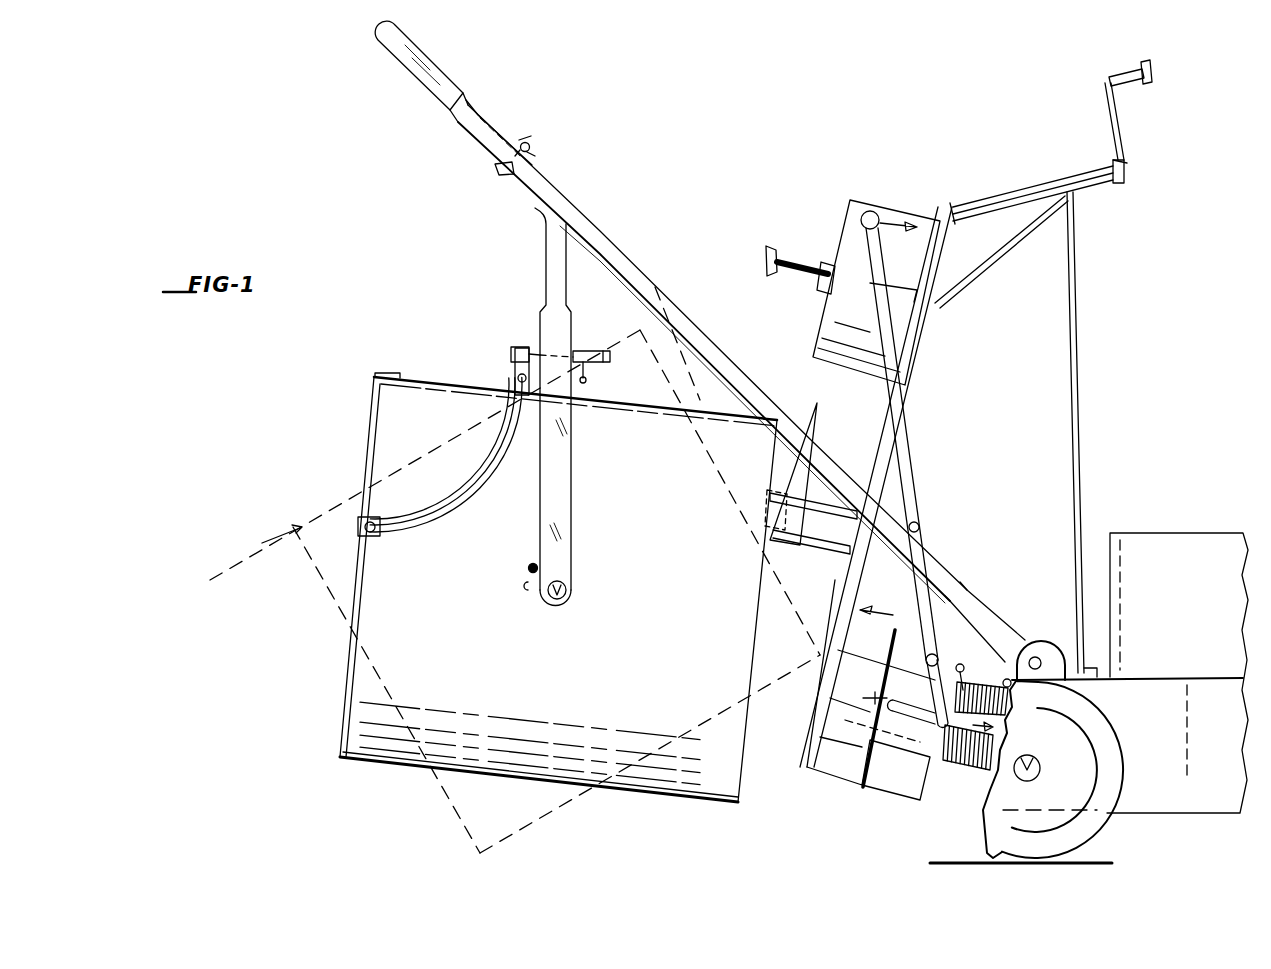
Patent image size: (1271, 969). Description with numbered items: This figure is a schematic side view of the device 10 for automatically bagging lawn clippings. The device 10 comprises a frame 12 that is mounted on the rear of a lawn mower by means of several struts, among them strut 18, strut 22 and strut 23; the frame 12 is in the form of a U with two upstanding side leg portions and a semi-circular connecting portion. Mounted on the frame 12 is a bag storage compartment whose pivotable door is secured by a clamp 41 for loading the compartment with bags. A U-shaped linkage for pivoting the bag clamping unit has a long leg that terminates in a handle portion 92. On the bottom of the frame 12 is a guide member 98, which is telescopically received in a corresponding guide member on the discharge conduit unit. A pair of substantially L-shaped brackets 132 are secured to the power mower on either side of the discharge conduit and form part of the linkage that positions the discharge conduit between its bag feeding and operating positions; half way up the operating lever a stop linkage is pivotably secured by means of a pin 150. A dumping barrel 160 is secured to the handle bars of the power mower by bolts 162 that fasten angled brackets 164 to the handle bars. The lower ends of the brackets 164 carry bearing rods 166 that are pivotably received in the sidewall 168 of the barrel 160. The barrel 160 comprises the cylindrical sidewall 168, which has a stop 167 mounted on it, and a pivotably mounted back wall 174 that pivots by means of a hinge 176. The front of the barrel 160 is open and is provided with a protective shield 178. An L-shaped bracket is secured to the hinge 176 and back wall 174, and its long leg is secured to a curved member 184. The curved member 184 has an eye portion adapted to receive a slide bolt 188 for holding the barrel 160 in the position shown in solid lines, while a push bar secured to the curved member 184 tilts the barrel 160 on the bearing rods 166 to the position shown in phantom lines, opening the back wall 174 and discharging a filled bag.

The device 10 is at (745, 205).
The frame 12 is at (935, 333).
The strut 18 is at (1012, 238).
The strut 22 is at (940, 302).
The strut 23 is at (830, 722).
The clamp 41 is at (893, 293).
The handle portion 92 is at (850, 543).
The guide member 98 is at (828, 777).
The L-shaped bracket 132 is at (1080, 735).
The pin 150 is at (925, 527).
The dumping barrel 160 is at (518, 648).
The bolt 162 is at (530, 142).
The angled bracket 164 is at (545, 262).
The bearing rod 166 is at (568, 590).
The stop 167 is at (528, 568).
The sidewall 168 is at (388, 605).
The back wall 174 is at (362, 450).
The hinge 176 is at (375, 392).
The protective shield 178 is at (803, 402).
The curved member 184 is at (410, 505).
The slide bolt 188 is at (573, 348).